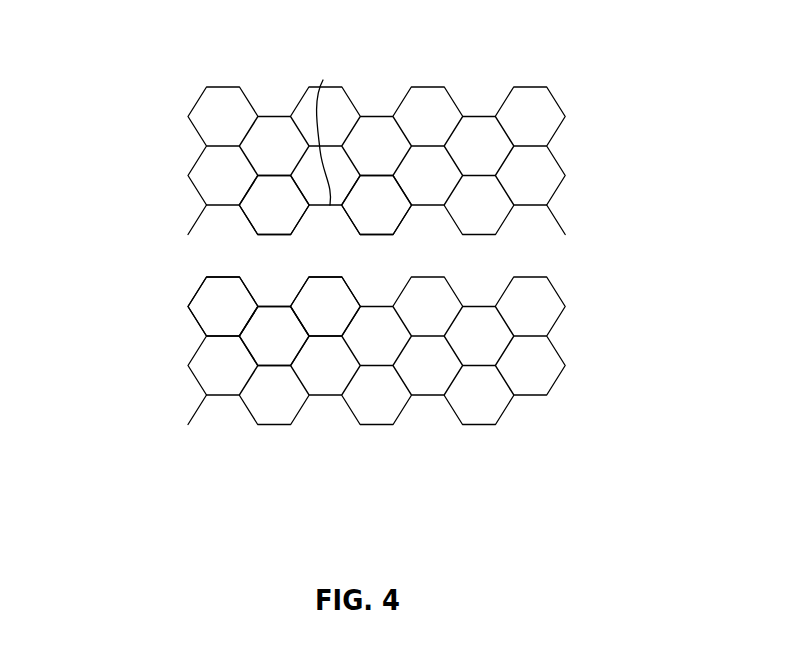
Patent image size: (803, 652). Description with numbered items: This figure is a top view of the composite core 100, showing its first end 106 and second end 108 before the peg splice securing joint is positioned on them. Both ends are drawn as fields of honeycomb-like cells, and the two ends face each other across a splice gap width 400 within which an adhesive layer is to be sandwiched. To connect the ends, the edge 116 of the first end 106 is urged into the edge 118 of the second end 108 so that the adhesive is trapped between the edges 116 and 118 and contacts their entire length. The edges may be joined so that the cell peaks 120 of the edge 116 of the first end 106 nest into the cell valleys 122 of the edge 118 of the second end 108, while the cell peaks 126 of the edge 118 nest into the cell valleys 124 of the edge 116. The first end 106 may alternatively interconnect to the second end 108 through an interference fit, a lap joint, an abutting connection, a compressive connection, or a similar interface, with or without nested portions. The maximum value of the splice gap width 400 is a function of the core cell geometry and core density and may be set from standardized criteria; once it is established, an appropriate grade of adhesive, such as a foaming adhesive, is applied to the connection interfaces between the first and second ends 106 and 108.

The composite core 100 is at (150, 87).
The first end 106 is at (235, 57).
The second end 108 is at (306, 433).
The edge of the first end 116 is at (383, 236).
The edge of the second end 118 is at (318, 278).
The cell peaks 120 is at (271, 236).
The cell valleys 122 is at (220, 277).
The cell valleys 124 is at (323, 80).
The cell peaks 126 is at (275, 305).
The splice gap width 400 is at (493, 254).